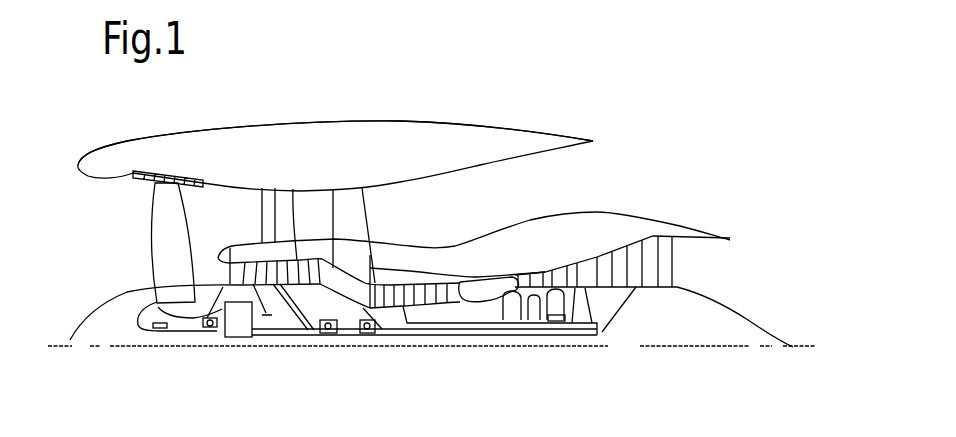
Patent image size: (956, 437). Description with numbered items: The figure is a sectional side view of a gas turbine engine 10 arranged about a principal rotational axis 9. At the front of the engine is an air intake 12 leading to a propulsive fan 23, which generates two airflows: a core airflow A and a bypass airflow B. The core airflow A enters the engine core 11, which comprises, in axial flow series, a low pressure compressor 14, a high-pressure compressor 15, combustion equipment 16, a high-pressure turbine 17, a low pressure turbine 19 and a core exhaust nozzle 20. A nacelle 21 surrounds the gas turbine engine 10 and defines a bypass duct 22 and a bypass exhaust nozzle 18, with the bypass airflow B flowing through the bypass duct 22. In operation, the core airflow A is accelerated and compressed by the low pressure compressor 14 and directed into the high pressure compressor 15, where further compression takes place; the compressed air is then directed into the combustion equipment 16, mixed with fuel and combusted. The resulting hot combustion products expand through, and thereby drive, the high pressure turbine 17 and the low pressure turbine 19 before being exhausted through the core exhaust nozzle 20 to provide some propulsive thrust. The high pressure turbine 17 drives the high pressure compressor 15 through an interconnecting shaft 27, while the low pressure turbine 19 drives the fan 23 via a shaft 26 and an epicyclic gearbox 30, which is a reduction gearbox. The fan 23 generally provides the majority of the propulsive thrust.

The principal rotational axis 9 is at (643, 347).
The gas turbine engine 10 is at (137, 134).
The core 11 is at (469, 261).
The air intake 12 is at (93, 210).
The low pressure compressor 14 is at (297, 200).
The high-pressure compressor 15 is at (417, 272).
The combustion equipment 16 is at (490, 292).
The high-pressure turbine 17 is at (536, 282).
The bypass exhaust nozzle 18 is at (645, 178).
The low pressure turbine 19 is at (650, 252).
The core exhaust nozzle 20 is at (707, 272).
The nacelle 21 is at (353, 128).
The bypass duct 22 is at (572, 188).
The propulsive fan 23 is at (157, 247).
The shaft 26 is at (413, 335).
The interconnecting shaft 27 is at (450, 325).
The epicyclic gearbox 30 is at (238, 322).
The core airflow A is at (221, 273).
The bypass airflow B is at (232, 218).